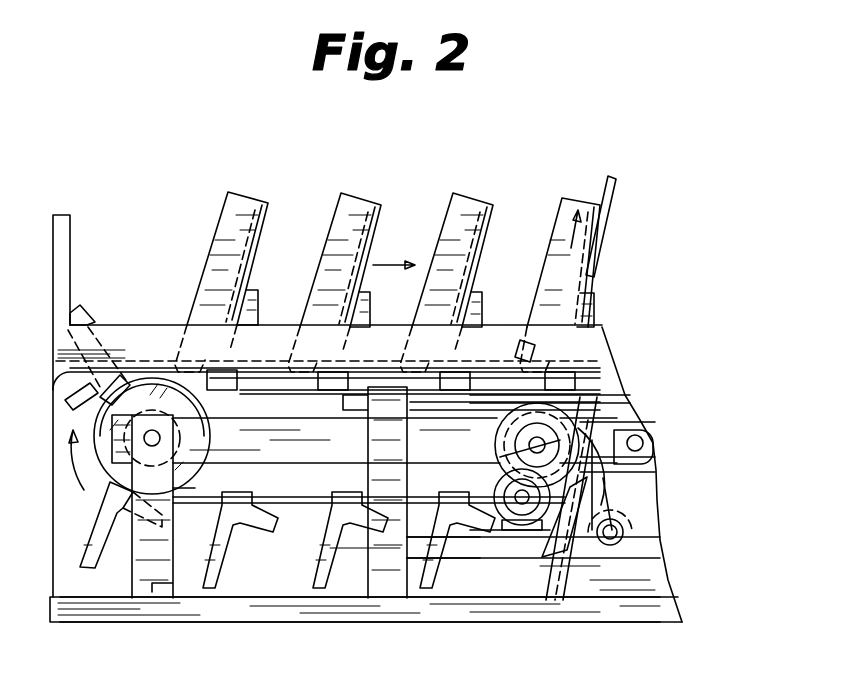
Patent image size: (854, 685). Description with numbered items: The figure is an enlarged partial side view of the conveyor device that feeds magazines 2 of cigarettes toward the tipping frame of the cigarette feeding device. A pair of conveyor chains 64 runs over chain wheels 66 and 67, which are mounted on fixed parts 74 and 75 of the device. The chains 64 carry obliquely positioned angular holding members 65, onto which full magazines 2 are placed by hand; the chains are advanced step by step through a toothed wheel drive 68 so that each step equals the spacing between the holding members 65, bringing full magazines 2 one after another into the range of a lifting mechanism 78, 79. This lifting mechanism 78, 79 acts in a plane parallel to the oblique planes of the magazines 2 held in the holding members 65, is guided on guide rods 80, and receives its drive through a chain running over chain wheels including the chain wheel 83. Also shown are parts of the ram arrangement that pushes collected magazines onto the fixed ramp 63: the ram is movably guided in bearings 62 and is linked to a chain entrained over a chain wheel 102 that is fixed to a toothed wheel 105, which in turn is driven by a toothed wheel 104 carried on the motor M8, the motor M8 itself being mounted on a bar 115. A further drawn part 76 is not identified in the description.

The magazine 2 is at (232, 212).
The fixed ramp 63 is at (153, 345).
The angular holding member 65 is at (80, 307).
The chain wheel 66 is at (203, 411).
The bearing 62 is at (367, 422).
The fixed part 74 is at (292, 453).
The conveyor chain 64 is at (303, 504).
The fixed part 75 is at (152, 588).
The base plate 76 is at (252, 613).
The lifting mechanism 79 is at (527, 350).
The chain wheel 102 is at (533, 432).
The toothed wheel 105 is at (500, 457).
The toothed wheel drive 68 is at (655, 477).
The chain wheel 67 is at (610, 488).
The bar 115 is at (468, 550).
The motor M8 is at (510, 526).
The toothed wheel 104 is at (522, 528).
The guide rod 80 is at (557, 577).
The lifting mechanism 78 is at (578, 557).
The chain wheel 83 is at (608, 550).